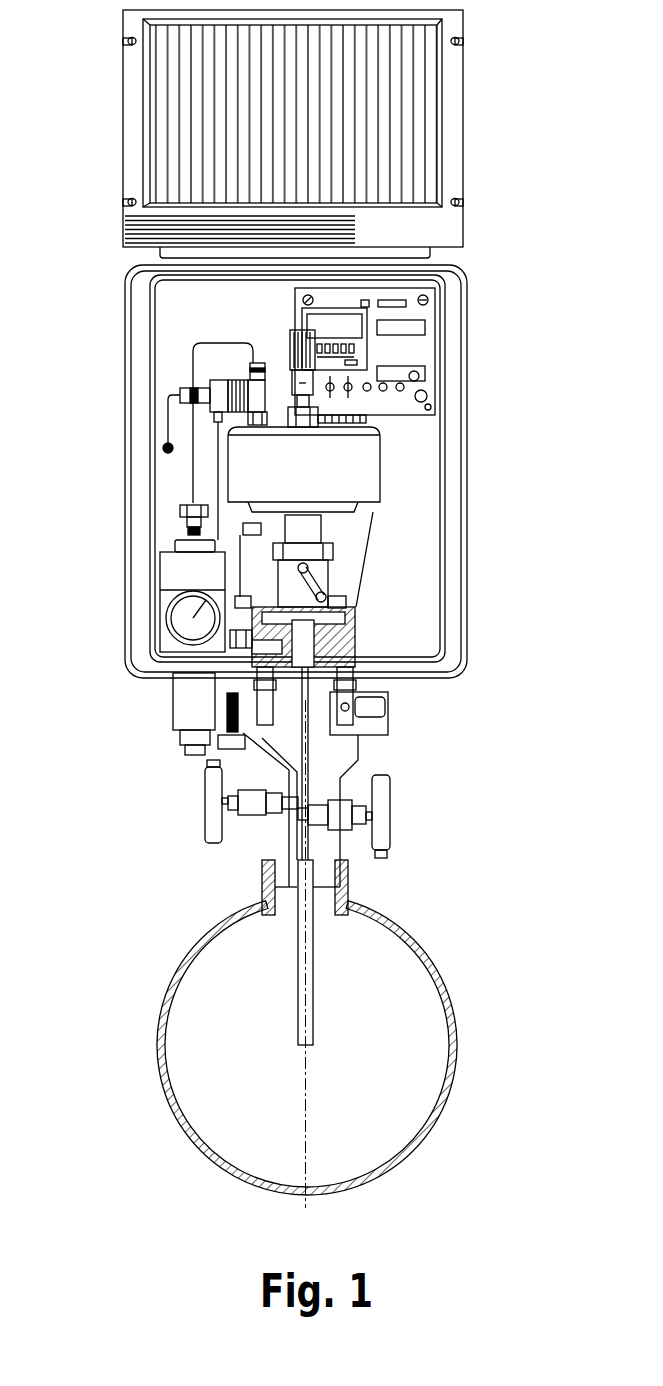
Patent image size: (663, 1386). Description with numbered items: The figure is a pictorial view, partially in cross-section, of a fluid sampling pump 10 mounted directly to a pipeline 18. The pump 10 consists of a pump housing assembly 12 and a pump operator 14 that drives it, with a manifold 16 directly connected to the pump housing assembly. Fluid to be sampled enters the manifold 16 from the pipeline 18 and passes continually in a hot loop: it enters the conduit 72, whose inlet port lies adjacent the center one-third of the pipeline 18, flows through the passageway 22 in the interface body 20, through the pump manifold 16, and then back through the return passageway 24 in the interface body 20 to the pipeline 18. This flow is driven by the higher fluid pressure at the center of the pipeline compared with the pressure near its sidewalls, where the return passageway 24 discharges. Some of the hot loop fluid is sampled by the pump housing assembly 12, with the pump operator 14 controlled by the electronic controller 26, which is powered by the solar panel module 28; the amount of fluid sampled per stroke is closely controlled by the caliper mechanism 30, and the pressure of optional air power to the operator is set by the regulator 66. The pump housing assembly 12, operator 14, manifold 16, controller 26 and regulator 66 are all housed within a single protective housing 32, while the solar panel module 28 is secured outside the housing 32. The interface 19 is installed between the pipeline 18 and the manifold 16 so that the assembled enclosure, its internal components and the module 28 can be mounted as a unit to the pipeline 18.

The sampling pump 10 is at (360, 565).
The pump housing assembly 12 is at (330, 580).
The pump operator 14 is at (358, 468).
The manifold 16 is at (325, 645).
The pipeline 18 is at (445, 1023).
The interface 19 is at (425, 781).
The interface body 20 is at (330, 773).
The passageway 22 is at (308, 746).
The return passageway 24 is at (290, 843).
The electronic controller 26 is at (430, 340).
The solar panel module 28 is at (442, 180).
The caliper mechanism 30 is at (292, 350).
The protective housing 32 is at (112, 539).
The regulator 66 is at (170, 575).
The conduit 72 is at (312, 978).